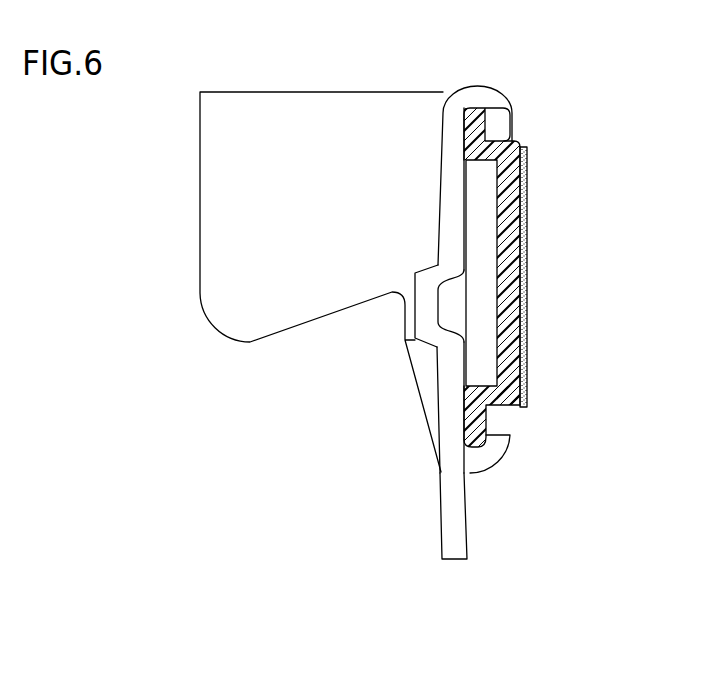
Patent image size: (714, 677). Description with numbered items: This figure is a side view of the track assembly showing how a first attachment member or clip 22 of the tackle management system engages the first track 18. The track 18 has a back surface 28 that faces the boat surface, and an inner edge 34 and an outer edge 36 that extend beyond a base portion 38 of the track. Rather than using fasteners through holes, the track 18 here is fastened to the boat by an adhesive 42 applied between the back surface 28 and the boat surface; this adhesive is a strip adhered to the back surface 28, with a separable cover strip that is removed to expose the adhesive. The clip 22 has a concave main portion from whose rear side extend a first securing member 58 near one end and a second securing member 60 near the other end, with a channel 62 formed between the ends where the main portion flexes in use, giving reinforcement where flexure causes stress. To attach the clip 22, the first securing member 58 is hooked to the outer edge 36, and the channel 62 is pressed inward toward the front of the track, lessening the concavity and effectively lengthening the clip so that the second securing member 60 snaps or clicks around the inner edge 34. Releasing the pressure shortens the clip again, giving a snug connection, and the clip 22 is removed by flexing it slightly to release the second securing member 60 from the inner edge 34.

The first track 18 is at (547, 429).
The first attachment member 22 is at (290, 365).
The back surface 28 is at (527, 173).
The inner edge 34 is at (475, 430).
The outer edge 36 is at (476, 119).
The base portion 38 is at (510, 330).
The adhesive 42 is at (527, 246).
The first securing member 58 is at (478, 100).
The second securing member 60 is at (476, 460).
The channel 62 is at (423, 317).